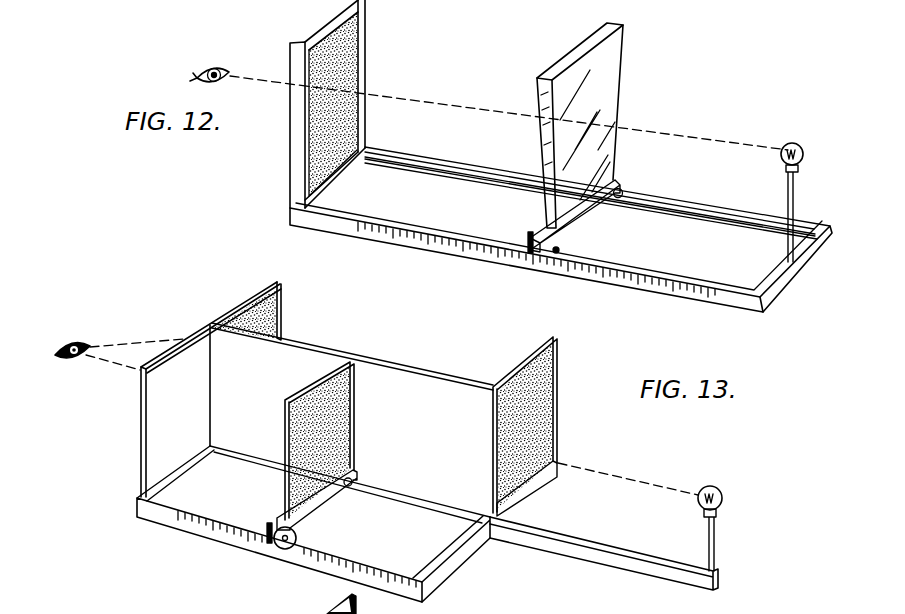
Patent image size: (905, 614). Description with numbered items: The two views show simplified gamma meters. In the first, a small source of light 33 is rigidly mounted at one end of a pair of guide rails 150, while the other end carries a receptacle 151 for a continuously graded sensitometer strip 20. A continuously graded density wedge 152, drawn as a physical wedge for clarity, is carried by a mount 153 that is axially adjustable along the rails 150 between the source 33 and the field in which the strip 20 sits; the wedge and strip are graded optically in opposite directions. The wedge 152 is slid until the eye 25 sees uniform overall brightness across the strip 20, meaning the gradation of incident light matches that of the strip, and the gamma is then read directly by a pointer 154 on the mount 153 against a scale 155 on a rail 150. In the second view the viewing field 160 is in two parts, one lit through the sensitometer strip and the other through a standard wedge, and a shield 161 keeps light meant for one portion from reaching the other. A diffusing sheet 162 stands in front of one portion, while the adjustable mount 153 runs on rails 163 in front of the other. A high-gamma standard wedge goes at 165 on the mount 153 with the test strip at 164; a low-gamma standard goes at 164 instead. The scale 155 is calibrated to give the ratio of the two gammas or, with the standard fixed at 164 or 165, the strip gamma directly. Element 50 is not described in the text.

In FIG. 12, the sensitometer strip 20 is at (327, 32).
In FIG. 12, the eye 25 is at (216, 66).
In FIG. 13, the eye 25 is at (77, 340).
In FIG. 12, the source of light 33 is at (792, 142).
In FIG. 13, the source of light 33 is at (722, 498).
In FIG. 13, the pointer indicator 50 is at (325, 608).
In FIG. 12, the guide rails 150 is at (735, 220).
In FIG. 12, the receptacle 151 is at (304, 104).
In FIG. 12, the density wedge 152 is at (612, 68).
In FIG. 12, the mount 153 is at (578, 215).
In FIG. 13, the mount 153 is at (318, 500).
In FIG. 12, the pointer 154 is at (528, 238).
In FIG. 13, the pointer 154 is at (268, 525).
In FIG. 12, the scale 155 is at (470, 248).
In FIG. 13, the scale 155 is at (220, 528).
In FIG. 13, the viewing field 160 is at (143, 418).
In FIG. 13, the shield 161 is at (415, 383).
In FIG. 13, the diffusing sheet 162 is at (514, 376).
In FIG. 13, the rails 163 is at (393, 571).
In FIG. 13, the position 164 is at (280, 313).
In FIG. 13, the position 165 is at (335, 368).